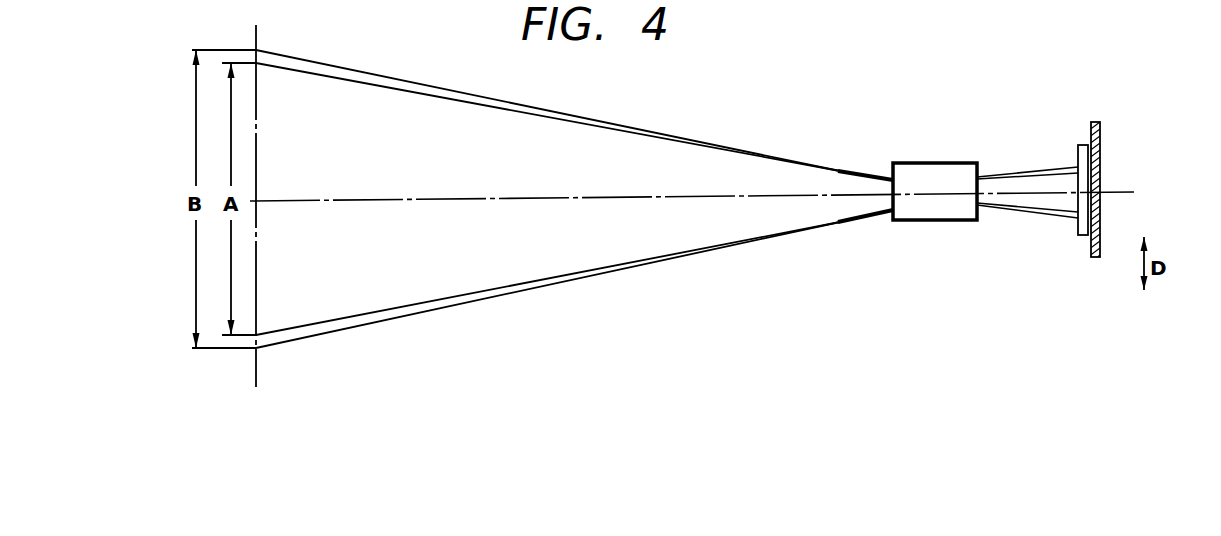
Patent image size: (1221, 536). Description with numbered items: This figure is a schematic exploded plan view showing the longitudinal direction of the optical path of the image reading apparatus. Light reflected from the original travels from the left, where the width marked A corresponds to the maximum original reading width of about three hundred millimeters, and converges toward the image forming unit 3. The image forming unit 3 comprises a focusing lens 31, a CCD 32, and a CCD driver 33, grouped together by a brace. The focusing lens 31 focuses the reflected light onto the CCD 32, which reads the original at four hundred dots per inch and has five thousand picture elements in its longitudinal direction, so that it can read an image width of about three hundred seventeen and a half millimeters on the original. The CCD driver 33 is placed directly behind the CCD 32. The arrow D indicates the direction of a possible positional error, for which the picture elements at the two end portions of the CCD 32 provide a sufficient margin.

The image forming unit 3 is at (1030, 203).
The focusing lens 31 is at (927, 222).
The CCD 32 is at (1078, 145).
The CCD driver 33 is at (1100, 134).